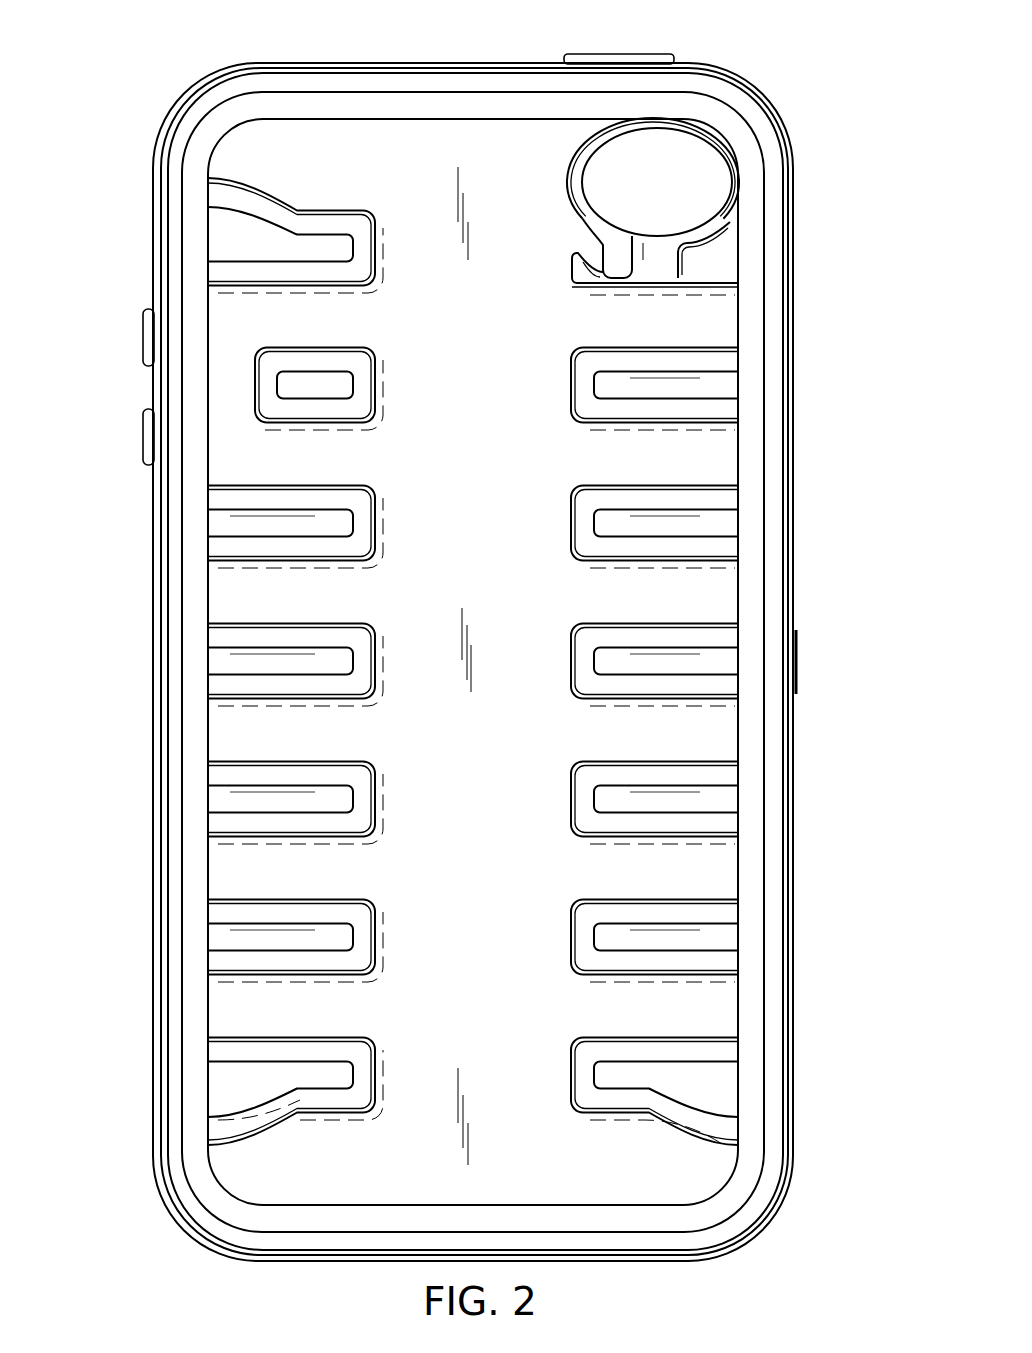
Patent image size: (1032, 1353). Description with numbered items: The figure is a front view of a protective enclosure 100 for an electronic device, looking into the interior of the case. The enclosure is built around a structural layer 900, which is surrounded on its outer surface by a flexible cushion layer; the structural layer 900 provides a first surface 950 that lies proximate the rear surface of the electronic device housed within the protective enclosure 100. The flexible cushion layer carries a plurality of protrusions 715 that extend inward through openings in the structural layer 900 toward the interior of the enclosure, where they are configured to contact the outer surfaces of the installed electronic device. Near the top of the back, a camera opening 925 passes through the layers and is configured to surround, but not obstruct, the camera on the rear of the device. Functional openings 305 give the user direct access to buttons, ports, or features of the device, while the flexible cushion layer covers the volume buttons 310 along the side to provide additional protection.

The protective enclosure 100 is at (808, 60).
The functional openings 305 is at (597, 52).
The volume buttons 310 is at (143, 340).
The protrusions 715 is at (682, 363).
The structural layer 900 is at (678, 462).
The camera opening 925 is at (645, 160).
The first surface 950 is at (510, 775).